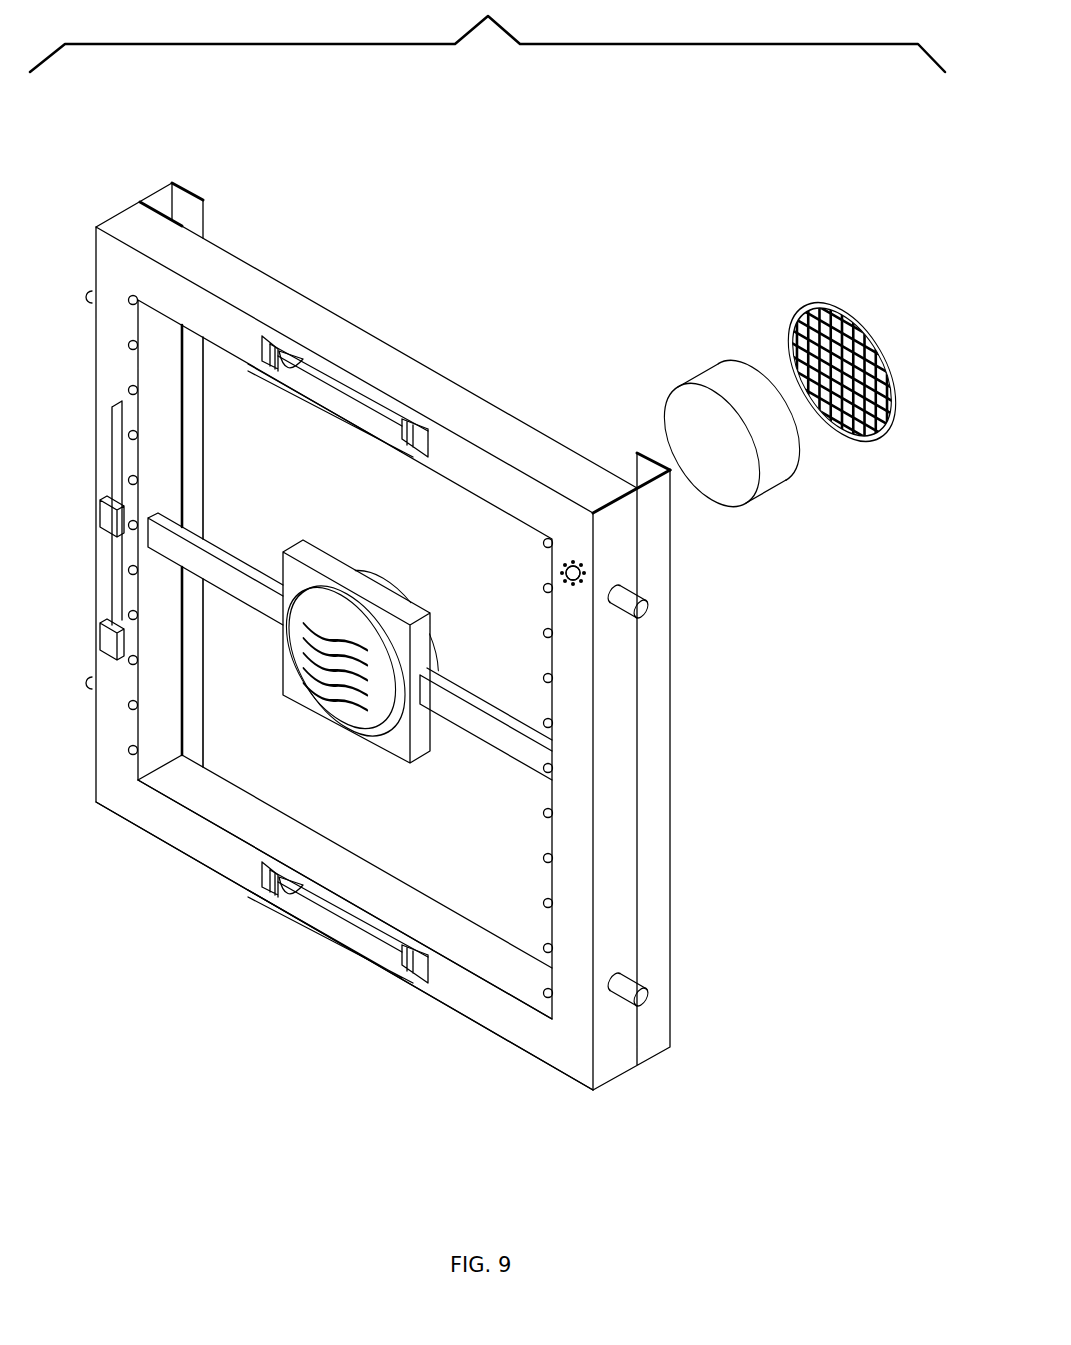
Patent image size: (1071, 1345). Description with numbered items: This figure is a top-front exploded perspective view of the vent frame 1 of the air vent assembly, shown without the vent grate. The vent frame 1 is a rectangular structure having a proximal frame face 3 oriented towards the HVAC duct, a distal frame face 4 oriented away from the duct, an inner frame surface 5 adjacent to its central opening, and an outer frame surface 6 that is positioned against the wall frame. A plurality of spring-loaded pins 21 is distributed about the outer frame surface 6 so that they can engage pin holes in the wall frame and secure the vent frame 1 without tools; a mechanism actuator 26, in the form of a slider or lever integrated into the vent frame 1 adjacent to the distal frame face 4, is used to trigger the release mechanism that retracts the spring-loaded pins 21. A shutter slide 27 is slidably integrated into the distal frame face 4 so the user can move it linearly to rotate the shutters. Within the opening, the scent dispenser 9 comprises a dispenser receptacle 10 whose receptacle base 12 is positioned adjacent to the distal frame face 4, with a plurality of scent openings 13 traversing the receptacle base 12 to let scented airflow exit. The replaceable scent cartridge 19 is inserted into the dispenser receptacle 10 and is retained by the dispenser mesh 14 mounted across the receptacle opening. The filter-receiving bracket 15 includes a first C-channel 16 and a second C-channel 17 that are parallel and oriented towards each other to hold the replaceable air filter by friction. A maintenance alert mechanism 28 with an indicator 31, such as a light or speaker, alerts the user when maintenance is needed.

The vent frame 1 is at (428, 260).
The proximal frame face 3 is at (526, 417).
The distal frame face 4 is at (193, 855).
The inner frame surface 5 is at (222, 793).
The outer frame surface 6 is at (389, 352).
The scent dispenser 9 is at (373, 667).
The dispenser receptacle 10 is at (392, 584).
The receptacle base 12 is at (315, 702).
The plurality of scent openings 13 is at (352, 715).
The dispenser mesh 14 is at (798, 318).
The filter-receiving bracket 15 is at (472, 636).
The first C-channel 16 is at (205, 214).
The second C-channel 17 is at (666, 762).
The replaceable scent cartridge 19 is at (778, 462).
The plurality of spring-loaded pins 21 is at (88, 305).
The mechanism actuator 26 is at (418, 455).
The shutter slide 27 is at (99, 500).
The maintenance alert mechanism 28 is at (576, 552).
The indicator 31 is at (560, 573).